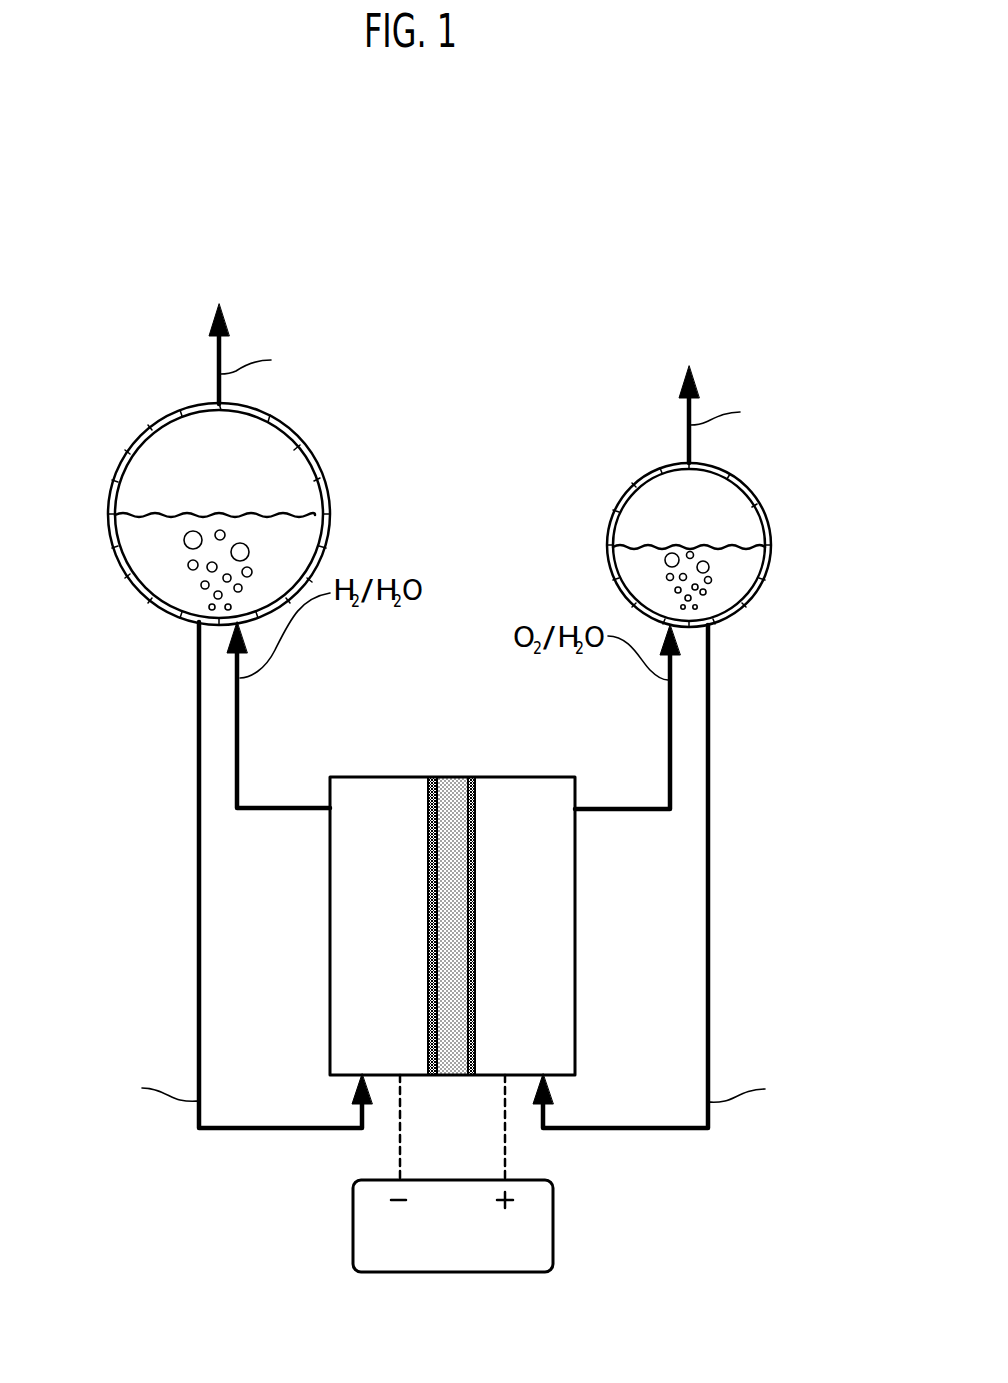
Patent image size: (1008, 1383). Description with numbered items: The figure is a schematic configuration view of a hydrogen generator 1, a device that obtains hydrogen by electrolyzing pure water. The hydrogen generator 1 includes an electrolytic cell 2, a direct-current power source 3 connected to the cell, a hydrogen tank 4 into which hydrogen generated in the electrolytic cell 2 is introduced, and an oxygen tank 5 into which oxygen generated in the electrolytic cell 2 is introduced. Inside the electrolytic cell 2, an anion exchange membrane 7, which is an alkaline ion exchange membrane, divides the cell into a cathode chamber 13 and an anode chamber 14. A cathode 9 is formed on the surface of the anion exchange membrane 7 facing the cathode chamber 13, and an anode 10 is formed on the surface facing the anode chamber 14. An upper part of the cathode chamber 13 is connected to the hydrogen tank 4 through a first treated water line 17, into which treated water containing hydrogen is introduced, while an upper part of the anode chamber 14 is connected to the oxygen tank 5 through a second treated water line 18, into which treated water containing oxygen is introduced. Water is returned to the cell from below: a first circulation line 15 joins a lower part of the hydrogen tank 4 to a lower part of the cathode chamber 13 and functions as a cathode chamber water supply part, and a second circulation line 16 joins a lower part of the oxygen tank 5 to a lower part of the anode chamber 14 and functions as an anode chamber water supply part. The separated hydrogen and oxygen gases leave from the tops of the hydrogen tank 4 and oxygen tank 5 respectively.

The hydrogen generator 1 is at (790, 318).
The electrolytic cell 2 is at (448, 848).
The direct-current power source 3 is at (503, 1273).
The hydrogen tank 4 is at (147, 433).
The oxygen tank 5 is at (748, 491).
The anion exchange membrane 7 is at (452, 777).
The cathode 9 is at (428, 803).
The anode 10 is at (475, 803).
The cathode chamber 13 is at (365, 935).
The anode chamber 14 is at (538, 937).
The first circulation line 15 is at (199, 1013).
The second circulation line 16 is at (708, 1014).
The first treated water line 17 is at (239, 745).
The second treated water line 18 is at (668, 727).